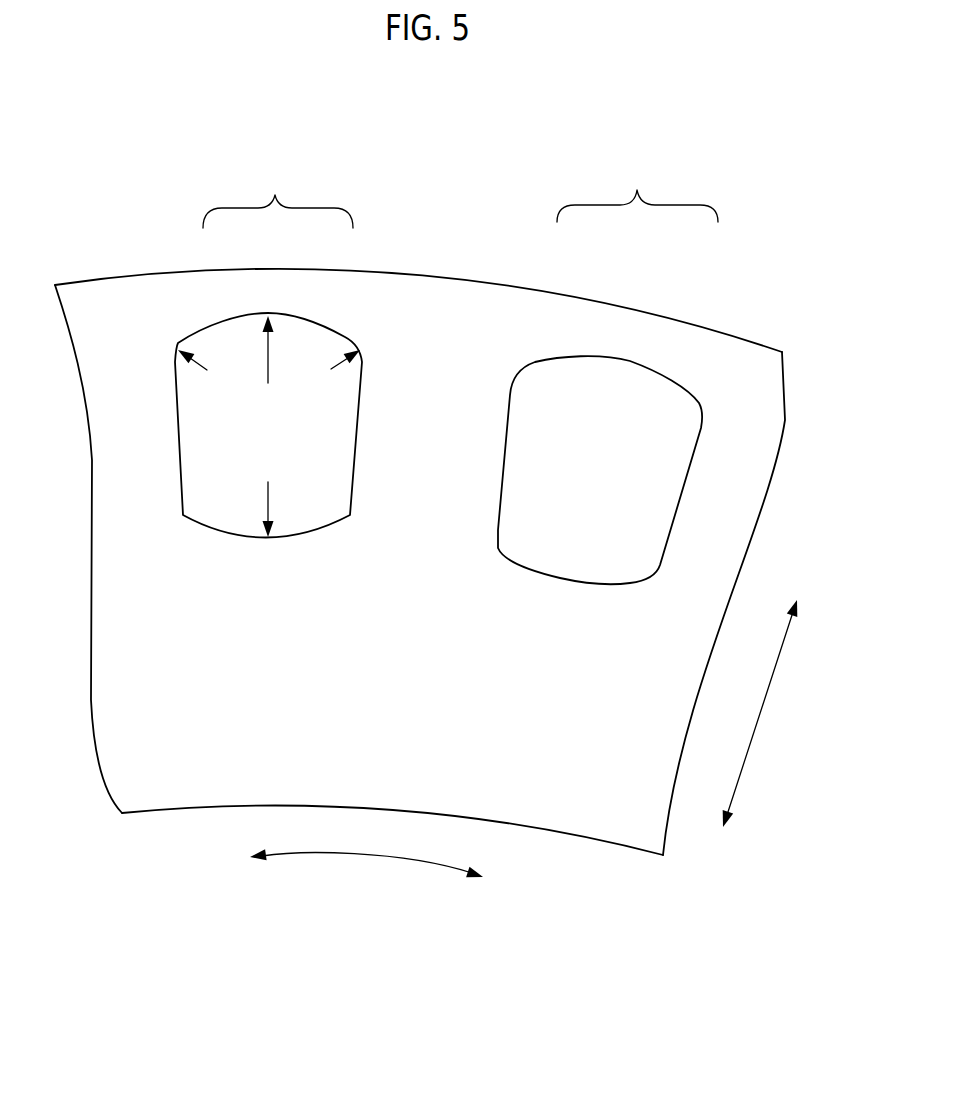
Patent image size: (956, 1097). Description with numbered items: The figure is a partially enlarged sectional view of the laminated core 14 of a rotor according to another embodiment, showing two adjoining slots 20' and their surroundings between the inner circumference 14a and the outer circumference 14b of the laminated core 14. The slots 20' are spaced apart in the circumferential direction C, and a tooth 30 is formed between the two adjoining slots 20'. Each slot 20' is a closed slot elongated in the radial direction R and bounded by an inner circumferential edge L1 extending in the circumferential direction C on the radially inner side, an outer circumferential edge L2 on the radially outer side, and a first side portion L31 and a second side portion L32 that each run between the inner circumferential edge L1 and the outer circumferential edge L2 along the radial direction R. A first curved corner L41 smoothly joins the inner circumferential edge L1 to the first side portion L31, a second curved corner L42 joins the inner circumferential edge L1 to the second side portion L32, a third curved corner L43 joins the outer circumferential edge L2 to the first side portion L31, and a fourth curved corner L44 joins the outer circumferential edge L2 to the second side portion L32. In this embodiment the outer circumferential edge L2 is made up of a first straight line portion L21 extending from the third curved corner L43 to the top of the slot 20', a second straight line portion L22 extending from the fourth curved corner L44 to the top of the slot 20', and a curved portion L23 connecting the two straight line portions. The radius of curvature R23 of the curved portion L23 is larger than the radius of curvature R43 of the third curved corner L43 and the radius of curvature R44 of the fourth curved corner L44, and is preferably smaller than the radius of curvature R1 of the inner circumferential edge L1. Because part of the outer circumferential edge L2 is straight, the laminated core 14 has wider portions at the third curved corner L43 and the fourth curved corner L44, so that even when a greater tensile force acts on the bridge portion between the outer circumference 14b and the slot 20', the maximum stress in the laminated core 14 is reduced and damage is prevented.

The laminated core 14 is at (424, 536).
The inner circumference 14a is at (555, 833).
The outer circumference 14b is at (494, 300).
The slot 20' is at (442, 448).
The tooth 30 is at (447, 413).
The inner circumferential edge L1 is at (278, 535).
The outer circumferential edge L2 is at (460, 192).
The first straight line portion L21 is at (220, 325).
The second straight line portion L22 is at (333, 326).
The curved portion L23 is at (270, 313).
The first side portion L31 is at (178, 437).
The second side portion L32 is at (360, 443).
The first curved corner L41 is at (186, 518).
The second curved corner L42 is at (346, 520).
The third curved corner L43 is at (177, 343).
The fourth curved corner L44 is at (358, 342).
The radius of curvature of the inner circumferential edge R1 is at (268, 494).
The radius of curvature of the curved portion R23 is at (270, 365).
The radius of curvature of the third curved corner R43 is at (215, 368).
The radius of curvature of the fourth curved corner R44 is at (322, 368).
The radial direction R is at (760, 713).
The circumferential direction C is at (366, 849).